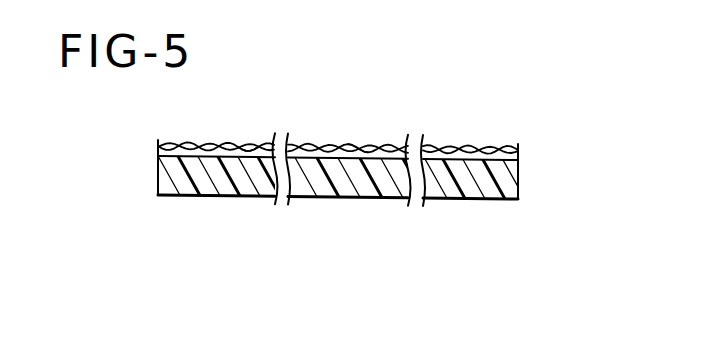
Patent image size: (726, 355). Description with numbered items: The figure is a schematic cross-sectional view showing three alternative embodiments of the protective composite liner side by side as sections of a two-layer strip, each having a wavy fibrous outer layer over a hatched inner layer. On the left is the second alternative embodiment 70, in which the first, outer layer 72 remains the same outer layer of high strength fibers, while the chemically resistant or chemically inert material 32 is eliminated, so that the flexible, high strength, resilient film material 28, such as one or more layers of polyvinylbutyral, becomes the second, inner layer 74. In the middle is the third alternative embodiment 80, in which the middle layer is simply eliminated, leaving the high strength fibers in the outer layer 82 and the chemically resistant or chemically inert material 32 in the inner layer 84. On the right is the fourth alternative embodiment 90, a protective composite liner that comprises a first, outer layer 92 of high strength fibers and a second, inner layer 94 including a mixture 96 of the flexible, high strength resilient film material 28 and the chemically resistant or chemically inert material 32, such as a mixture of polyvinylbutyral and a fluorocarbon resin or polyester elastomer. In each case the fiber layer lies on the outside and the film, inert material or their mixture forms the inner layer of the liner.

The flexible, high strength, resilient film material 28 is at (222, 186).
The chemically resistant or chemically inert material 32 is at (378, 202).
The second alternative embodiment 70 is at (162, 181).
The first, outer layer 72 is at (152, 141).
The second, inner layer 74 is at (156, 179).
The third alternative embodiment 80 is at (373, 173).
The outer layer 82 is at (337, 137).
The inner layer 84 is at (357, 200).
The fourth alternative embodiment 90 is at (522, 195).
The first, outer layer 92 is at (520, 142).
The second, inner layer 94 is at (527, 180).
The mixture 96 is at (486, 189).